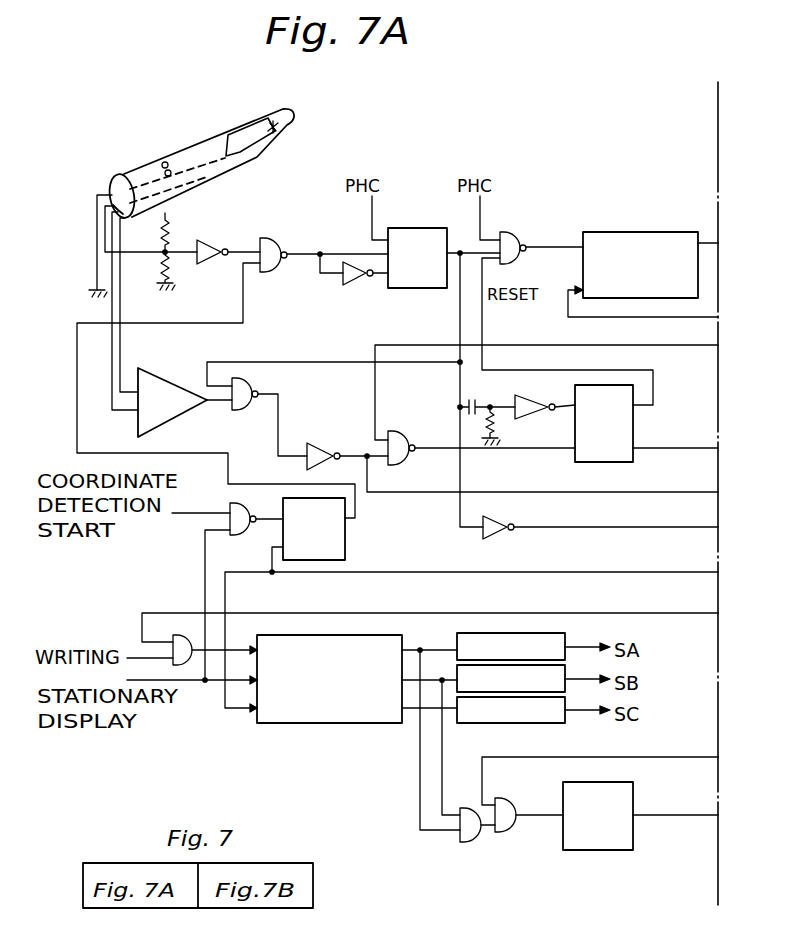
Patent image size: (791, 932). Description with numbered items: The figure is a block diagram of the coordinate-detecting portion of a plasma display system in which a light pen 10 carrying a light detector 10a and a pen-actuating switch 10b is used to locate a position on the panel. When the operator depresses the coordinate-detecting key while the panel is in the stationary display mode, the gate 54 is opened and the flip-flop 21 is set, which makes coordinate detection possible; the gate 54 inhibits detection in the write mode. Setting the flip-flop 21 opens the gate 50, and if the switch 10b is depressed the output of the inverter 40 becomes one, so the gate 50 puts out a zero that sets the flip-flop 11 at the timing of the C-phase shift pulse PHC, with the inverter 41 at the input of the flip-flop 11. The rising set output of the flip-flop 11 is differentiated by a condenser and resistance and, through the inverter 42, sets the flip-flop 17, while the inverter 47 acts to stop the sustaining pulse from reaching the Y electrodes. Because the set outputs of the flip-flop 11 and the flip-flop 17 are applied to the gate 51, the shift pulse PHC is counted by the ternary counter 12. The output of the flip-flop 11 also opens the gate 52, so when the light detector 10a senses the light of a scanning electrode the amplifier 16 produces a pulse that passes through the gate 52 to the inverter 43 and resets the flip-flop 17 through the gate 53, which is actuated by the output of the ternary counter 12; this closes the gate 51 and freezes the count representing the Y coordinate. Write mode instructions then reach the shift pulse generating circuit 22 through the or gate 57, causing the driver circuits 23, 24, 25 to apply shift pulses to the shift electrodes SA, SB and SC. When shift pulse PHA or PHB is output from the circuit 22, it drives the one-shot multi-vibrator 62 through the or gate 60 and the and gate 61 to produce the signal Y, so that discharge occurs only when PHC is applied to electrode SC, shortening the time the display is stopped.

The light pen 10 is at (232, 97).
The light detector 10a is at (276, 150).
The pen-actuating switch 10b is at (183, 143).
The flip-flop 11 is at (422, 228).
The ternary counter 12 is at (636, 232).
The amplifier 16 is at (178, 378).
The flip-flop 17 is at (612, 462).
The flip-flop 21 is at (345, 540).
The shift pulse generating circuit 22 is at (306, 724).
The driver circuit for shift electrode 23 is at (555, 633).
The driver circuit for shift electrode 24 is at (565, 667).
The driver circuit for shift electrode 25 is at (565, 714).
The inverter 40 is at (207, 240).
The inverter 41 is at (352, 287).
The inverter 42 is at (530, 419).
The inverter 43 is at (323, 443).
The inverter 47 is at (498, 518).
The nand gate 50 is at (270, 238).
The nand gate 51 is at (516, 233).
The nand gate 52 is at (248, 379).
The nand gate 53 is at (404, 431).
The nand gate 54 is at (246, 536).
The or gate 57 is at (178, 635).
The or gate 60 is at (470, 843).
The and gate 61 is at (508, 833).
The one-shot multi-vibrator 62 is at (598, 851).